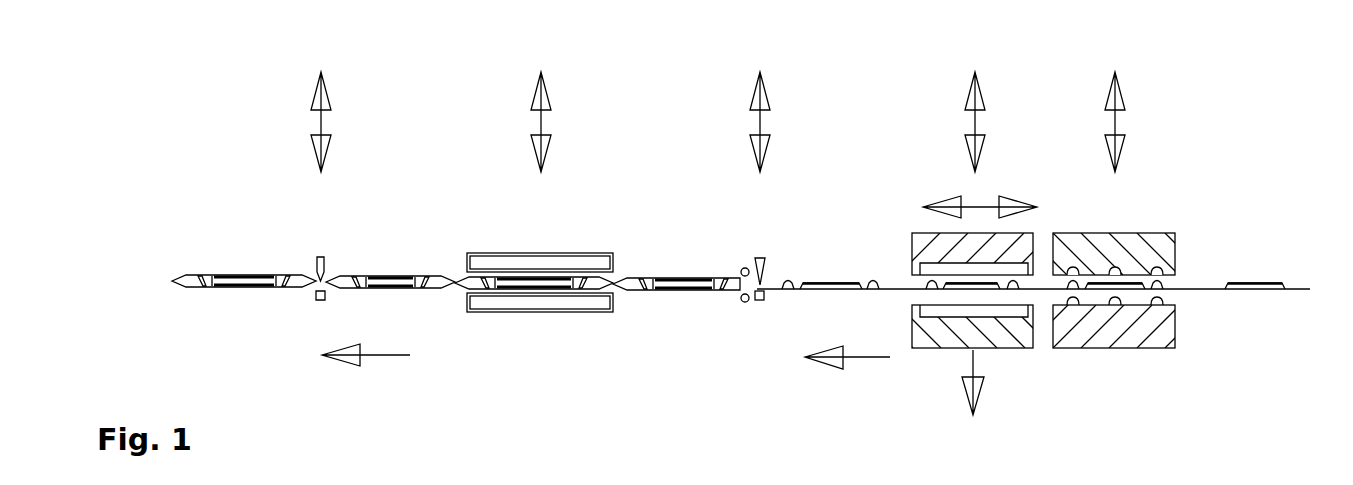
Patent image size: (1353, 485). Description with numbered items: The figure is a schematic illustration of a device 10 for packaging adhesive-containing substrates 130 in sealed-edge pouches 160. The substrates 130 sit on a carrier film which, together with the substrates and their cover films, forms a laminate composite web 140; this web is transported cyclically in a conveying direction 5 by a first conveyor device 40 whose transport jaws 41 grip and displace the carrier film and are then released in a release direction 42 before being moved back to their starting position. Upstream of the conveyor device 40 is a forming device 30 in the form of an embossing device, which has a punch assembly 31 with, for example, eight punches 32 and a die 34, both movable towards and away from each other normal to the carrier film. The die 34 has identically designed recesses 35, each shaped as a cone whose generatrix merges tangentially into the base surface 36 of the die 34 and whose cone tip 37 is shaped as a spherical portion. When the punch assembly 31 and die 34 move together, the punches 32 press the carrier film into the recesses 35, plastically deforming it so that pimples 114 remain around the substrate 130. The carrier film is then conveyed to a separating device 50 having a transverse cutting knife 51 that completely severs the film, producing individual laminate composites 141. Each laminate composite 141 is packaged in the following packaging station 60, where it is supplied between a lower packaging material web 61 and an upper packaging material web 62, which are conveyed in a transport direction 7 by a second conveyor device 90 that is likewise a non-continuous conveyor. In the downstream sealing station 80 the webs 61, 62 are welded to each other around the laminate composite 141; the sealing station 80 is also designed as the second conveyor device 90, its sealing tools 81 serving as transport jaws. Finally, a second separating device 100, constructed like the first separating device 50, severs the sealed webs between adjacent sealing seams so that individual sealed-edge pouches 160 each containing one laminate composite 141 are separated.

The conveying direction 5 is at (849, 357).
The transport direction 7 is at (367, 355).
The device 10 is at (503, 225).
The forming device 30 is at (1180, 360).
The punch assembly 31 is at (1176, 302).
The punch 32 is at (1114, 301).
The die 34 is at (1140, 247).
The recess 35 is at (1115, 267).
The base surface 36 is at (1174, 273).
The cone tip 37 is at (1074, 267).
The first conveyor device 40 is at (1030, 358).
The transport jaws 41 is at (929, 321).
The release direction 42 is at (973, 375).
The separating device 50 is at (755, 314).
The transverse cutting knife 51 is at (762, 268).
The packaging station 60 is at (688, 272).
The lower packaging material web 61 is at (753, 306).
The upper packaging material web 62 is at (755, 256).
The sealing station 80 is at (500, 252).
The sealing tools 81 is at (474, 313).
The second conveyor device 90 is at (465, 252).
The second separating device 100 is at (319, 254).
The pimples 114 is at (873, 282).
The adhesive-containing substrate 130 is at (818, 290).
The laminate composite web 140 is at (795, 291).
The laminate composite 141 is at (650, 272).
The sealed-edge pouch 160 is at (236, 299).